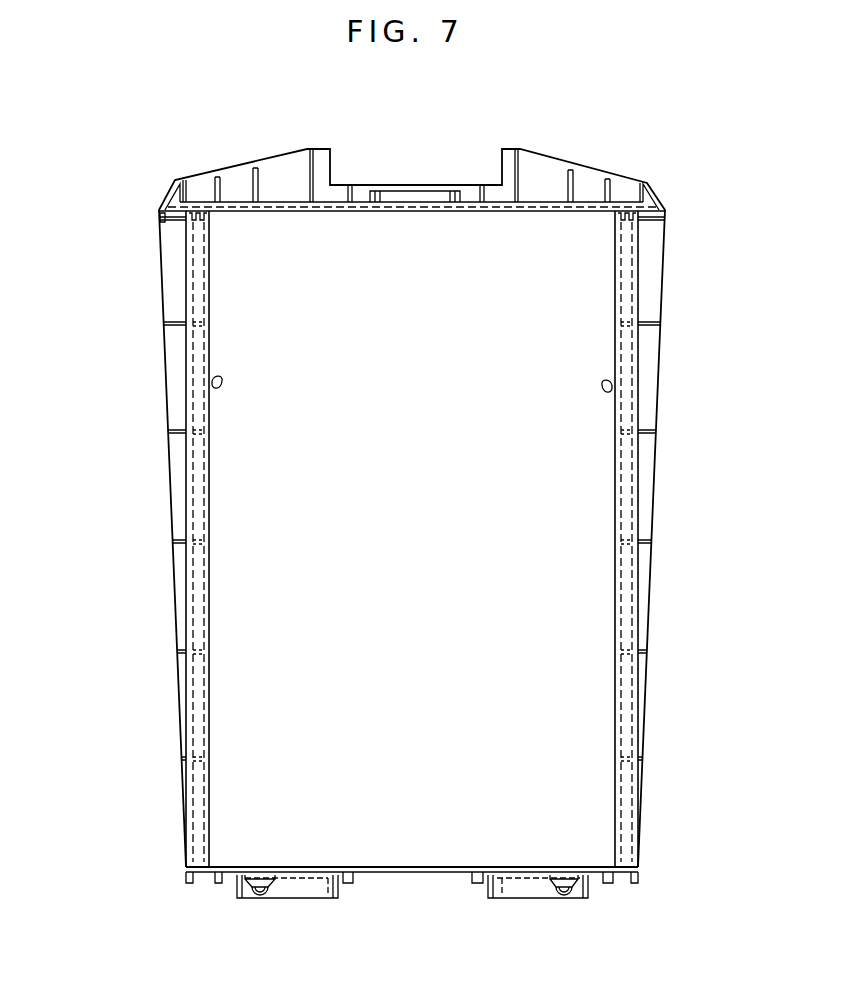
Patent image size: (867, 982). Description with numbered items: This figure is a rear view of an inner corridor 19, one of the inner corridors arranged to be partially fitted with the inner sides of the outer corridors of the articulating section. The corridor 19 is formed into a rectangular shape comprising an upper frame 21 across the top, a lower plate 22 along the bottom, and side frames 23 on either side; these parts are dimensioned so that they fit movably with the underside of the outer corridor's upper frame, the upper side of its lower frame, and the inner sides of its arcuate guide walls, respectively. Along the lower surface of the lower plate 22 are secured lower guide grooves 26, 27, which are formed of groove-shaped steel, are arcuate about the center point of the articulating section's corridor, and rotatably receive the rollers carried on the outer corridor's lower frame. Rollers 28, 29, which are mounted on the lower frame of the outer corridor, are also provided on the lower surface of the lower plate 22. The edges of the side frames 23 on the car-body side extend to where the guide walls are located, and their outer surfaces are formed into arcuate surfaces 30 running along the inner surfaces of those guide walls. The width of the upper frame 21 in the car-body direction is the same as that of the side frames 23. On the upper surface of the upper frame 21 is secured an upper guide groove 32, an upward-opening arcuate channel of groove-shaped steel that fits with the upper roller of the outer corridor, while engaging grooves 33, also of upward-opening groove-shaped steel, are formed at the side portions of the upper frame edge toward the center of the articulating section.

The inner corridor 19 is at (670, 274).
The upper frame 21 is at (363, 213).
The lower plate 22 is at (421, 875).
The side frames 23 is at (212, 384).
The lower guide groove 26 is at (525, 890).
The lower guide groove 27 is at (315, 890).
The roller 28 is at (565, 902).
The roller 29 is at (258, 903).
The arcuate surfaces 30 is at (197, 492).
The upper guide groove 32 is at (411, 192).
The engaging grooves 33 is at (282, 175).